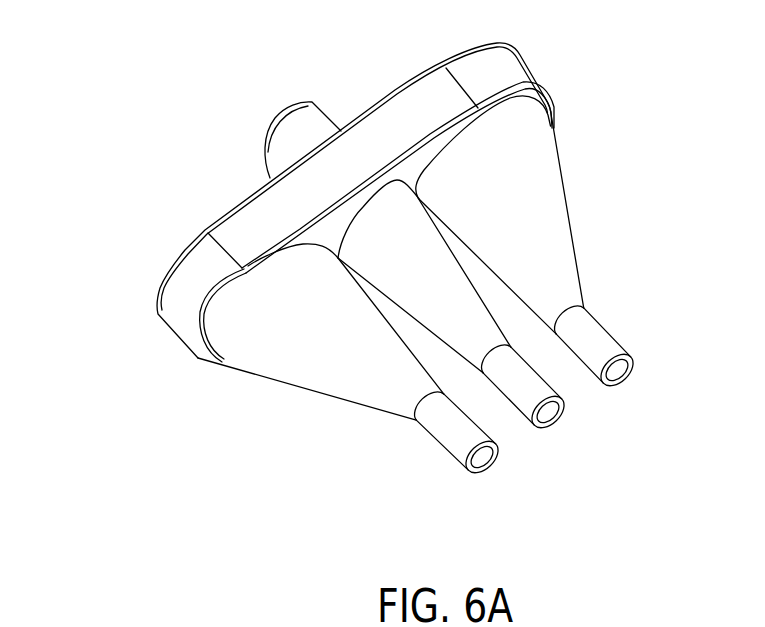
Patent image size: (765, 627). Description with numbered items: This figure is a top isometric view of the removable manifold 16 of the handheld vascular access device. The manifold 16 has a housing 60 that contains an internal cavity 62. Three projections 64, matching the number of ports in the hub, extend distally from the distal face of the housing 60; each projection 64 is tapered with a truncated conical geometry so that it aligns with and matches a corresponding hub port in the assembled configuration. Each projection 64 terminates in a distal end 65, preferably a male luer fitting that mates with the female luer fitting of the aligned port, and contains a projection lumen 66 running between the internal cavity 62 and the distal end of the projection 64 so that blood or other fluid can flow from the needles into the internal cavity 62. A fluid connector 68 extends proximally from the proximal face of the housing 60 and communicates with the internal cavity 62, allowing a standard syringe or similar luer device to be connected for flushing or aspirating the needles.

The removable manifold 16 is at (103, 222).
The housing 60 is at (518, 72).
The internal cavity 62 is at (408, 112).
The projections 64 is at (571, 221).
The distal end 65 is at (440, 452).
The projection lumen 66 is at (481, 473).
The fluid connector 68 is at (280, 157).